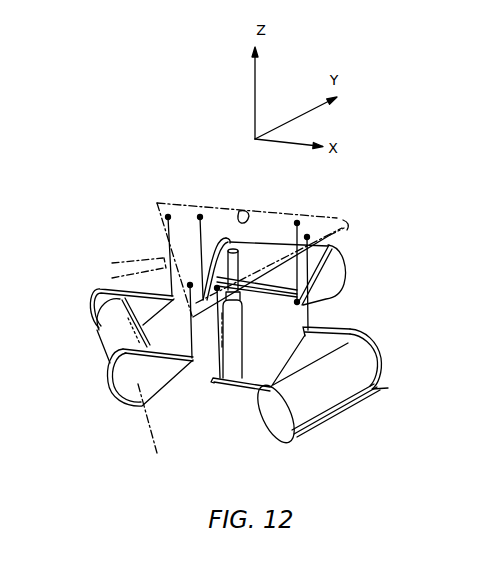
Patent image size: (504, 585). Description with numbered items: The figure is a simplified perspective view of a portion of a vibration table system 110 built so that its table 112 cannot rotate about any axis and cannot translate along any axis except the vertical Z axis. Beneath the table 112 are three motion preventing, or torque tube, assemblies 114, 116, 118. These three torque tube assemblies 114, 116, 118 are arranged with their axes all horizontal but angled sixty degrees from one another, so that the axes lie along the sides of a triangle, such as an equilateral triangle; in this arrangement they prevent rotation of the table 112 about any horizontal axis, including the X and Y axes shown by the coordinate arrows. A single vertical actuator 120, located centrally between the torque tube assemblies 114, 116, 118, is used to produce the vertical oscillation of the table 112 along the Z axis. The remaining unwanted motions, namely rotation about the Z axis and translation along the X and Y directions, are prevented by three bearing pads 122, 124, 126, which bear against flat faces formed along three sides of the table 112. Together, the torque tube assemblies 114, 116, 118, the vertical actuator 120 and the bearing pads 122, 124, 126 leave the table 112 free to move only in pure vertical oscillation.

The vibration table system 110 is at (372, 191).
The table 112 is at (181, 208).
The torque tube assembly 114 is at (388, 388).
The torque tube assembly 116 is at (99, 358).
The torque tube assembly 118 is at (352, 277).
The vertical actuator 120 is at (236, 338).
The bearing pad 122 is at (246, 293).
The bearing pad 124 is at (112, 262).
The bearing pad 126 is at (249, 208).